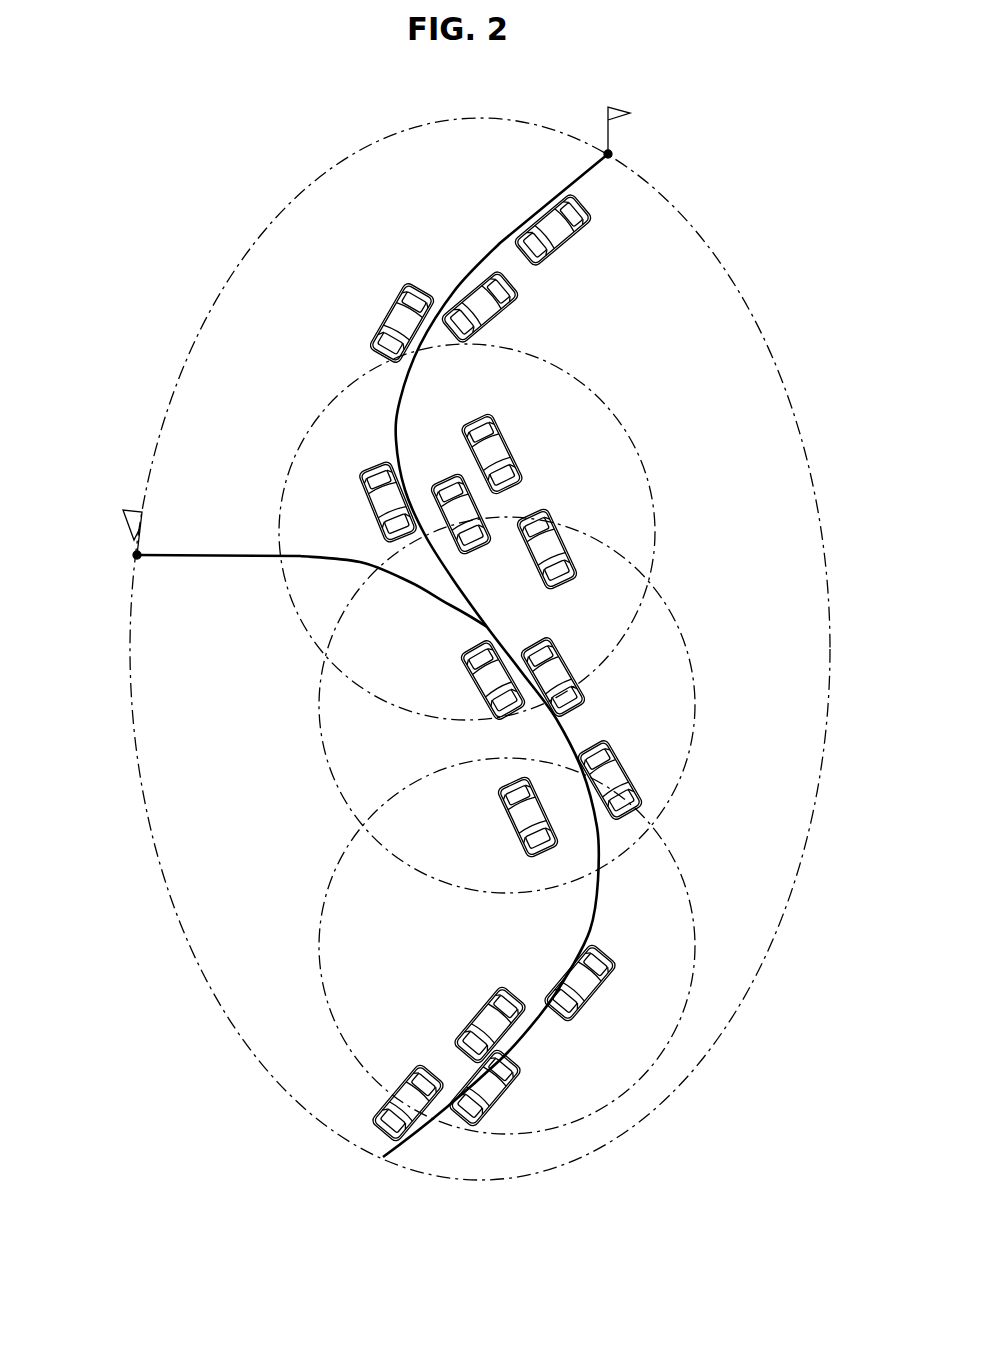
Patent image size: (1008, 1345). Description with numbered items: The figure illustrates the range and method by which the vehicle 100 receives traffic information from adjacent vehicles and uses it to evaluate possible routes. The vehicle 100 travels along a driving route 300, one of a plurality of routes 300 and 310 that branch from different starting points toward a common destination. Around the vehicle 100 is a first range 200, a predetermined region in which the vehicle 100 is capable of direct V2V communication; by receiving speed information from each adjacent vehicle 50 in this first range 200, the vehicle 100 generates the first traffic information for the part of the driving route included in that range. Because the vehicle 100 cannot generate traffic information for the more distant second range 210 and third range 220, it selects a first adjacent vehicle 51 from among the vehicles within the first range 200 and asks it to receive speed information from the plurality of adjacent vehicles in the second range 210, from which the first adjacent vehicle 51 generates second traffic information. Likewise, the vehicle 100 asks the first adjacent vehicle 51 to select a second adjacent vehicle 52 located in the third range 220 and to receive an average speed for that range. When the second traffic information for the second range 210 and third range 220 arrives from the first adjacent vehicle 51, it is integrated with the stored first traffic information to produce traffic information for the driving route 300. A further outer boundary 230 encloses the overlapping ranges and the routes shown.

The adjacent vehicle 50 is at (567, 1023).
The first adjacent vehicle 51 is at (514, 820).
The second adjacent vehicle 52 is at (483, 556).
The vehicle 100 is at (482, 1012).
The first range 200 is at (686, 880).
The second range 210 is at (686, 637).
The third range 220 is at (642, 448).
The fourth region 230 is at (785, 393).
The driving route 300 is at (612, 152).
The route 310 is at (133, 556).